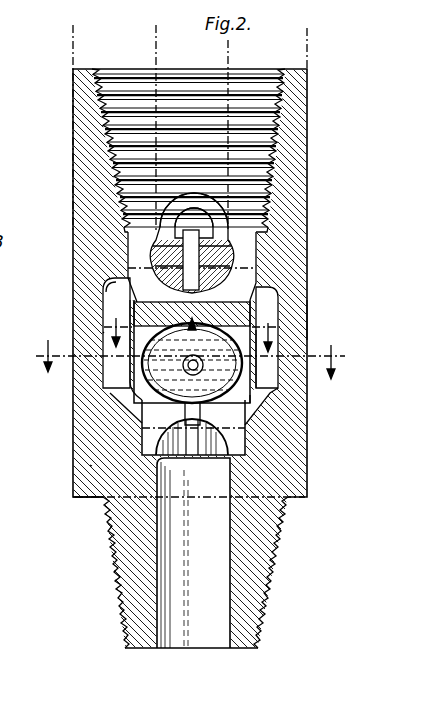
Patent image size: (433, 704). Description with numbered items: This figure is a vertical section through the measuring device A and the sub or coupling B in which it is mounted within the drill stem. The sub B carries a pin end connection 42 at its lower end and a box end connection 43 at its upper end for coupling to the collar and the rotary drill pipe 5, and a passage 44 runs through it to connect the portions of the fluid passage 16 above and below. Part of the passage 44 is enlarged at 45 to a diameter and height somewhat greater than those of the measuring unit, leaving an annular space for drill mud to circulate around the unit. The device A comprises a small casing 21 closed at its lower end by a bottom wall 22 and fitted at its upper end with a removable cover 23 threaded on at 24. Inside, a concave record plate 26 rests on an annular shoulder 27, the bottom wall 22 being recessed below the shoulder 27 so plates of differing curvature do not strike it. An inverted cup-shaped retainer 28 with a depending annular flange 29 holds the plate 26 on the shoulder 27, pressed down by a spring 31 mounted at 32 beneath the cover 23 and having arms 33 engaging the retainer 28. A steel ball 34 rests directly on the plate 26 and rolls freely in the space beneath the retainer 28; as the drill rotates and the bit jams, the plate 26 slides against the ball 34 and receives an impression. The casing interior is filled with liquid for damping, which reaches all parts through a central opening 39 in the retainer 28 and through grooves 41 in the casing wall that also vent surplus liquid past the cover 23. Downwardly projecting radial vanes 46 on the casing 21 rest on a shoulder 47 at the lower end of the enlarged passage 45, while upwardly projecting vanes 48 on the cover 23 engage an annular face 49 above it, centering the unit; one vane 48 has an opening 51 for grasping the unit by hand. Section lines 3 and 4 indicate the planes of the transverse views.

The rotary drill pipe 5 is at (73, 42).
The fluid passage 16 is at (156, 50).
The box end connection 43 is at (283, 140).
The upwardly projecting vanes 48 is at (196, 256).
The annular face 49 is at (260, 266).
The removable cover 23 is at (240, 287).
The spring arms 33 is at (262, 287).
The casing 21 is at (293, 333).
The cement 3 is at (191, 331).
The lower portion of bore hole 4 is at (191, 311).
The grooves or passages 41 is at (275, 370).
The depending annular flange 29 is at (250, 400).
The record plate 26 is at (246, 392).
The downwardly projecting radial vanes 46 is at (192, 458).
The pin end connection 42 is at (263, 572).
The passage 44 is at (175, 523).
The shoulder 47 is at (76, 497).
The sub or coupling B is at (90, 465).
The central opening 39 is at (150, 405).
The measuring device A is at (135, 375).
The inverted cup-shaped retainer 28 is at (110, 372).
The annular shoulder 27 is at (129, 353).
The bottom wall 22 is at (192, 363).
The ball 34 is at (210, 372).
The threaded connection 24 is at (152, 307).
The spring mounting 32 is at (201, 296).
The spring 31 is at (222, 298).
The enlarged passage portion 45 is at (103, 332).
The opening 51 is at (130, 262).